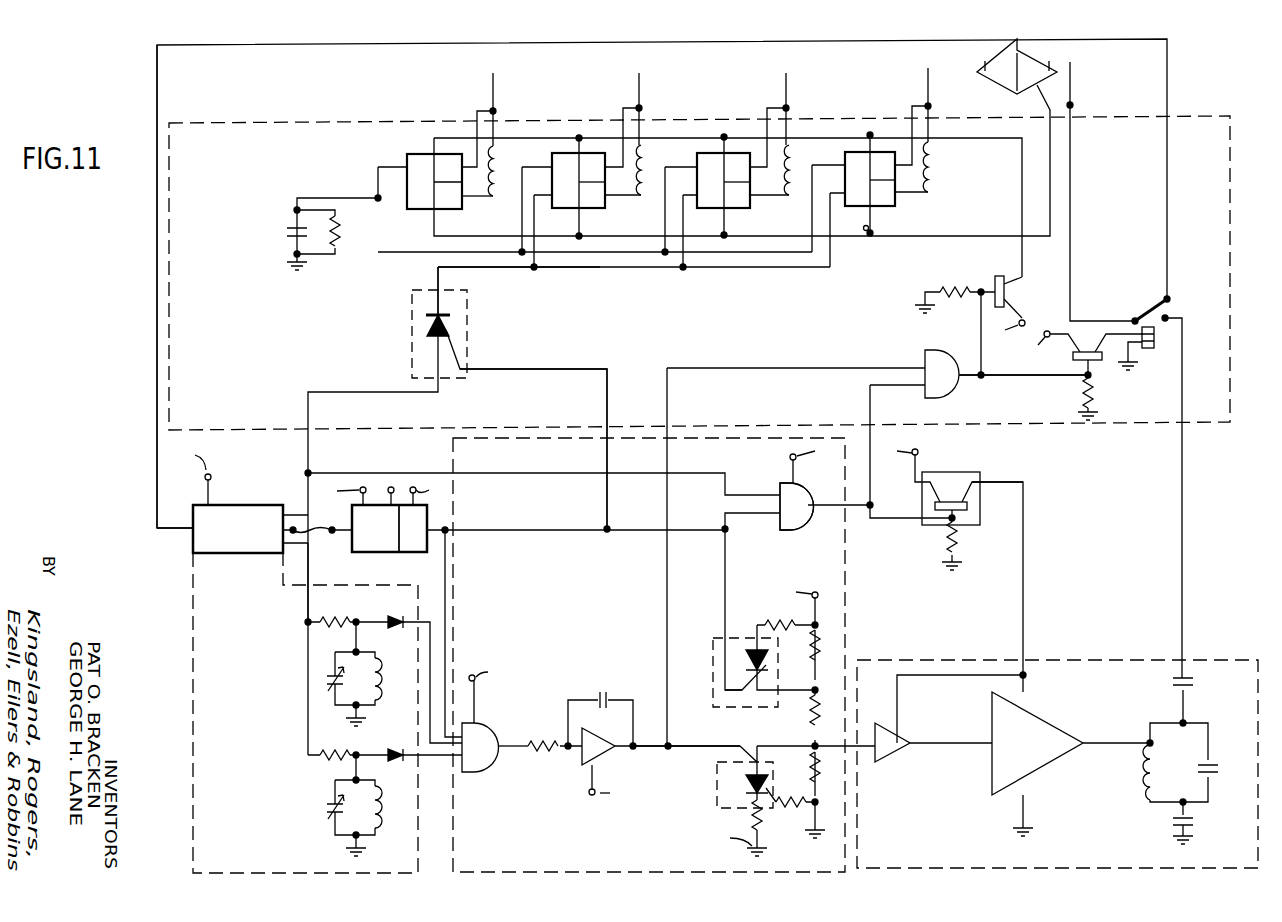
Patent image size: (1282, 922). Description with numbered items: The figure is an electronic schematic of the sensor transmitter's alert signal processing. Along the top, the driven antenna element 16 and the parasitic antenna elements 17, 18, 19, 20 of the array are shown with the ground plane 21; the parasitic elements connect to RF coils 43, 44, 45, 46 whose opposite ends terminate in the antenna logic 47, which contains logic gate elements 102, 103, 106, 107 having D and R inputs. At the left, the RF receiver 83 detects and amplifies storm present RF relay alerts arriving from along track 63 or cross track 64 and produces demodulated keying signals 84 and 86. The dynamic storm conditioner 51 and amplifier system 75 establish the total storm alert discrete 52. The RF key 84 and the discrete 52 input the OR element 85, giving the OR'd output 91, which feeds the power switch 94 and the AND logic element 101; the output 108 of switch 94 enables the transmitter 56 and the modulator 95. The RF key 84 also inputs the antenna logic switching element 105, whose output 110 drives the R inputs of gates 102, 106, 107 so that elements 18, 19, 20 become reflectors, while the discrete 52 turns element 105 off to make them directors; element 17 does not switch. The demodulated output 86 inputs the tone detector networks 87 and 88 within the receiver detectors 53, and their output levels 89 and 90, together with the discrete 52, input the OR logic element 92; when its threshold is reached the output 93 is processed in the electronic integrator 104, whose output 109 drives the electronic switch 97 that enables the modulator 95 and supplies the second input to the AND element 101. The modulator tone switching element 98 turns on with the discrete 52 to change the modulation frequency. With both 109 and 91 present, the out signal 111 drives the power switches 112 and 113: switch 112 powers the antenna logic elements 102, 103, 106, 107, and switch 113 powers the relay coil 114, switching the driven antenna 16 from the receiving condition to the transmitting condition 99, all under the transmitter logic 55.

The driven antenna element 16 is at (1072, 90).
The parasitic antenna element 17 is at (493, 86).
The parasitic antenna element 18 is at (639, 86).
The parasitic antenna element 19 is at (786, 86).
The parasitic antenna element 20 is at (928, 84).
The ground plane 21 is at (990, 83).
The RF coil 43 is at (499, 165).
The RF coil 44 is at (647, 165).
The RF coil 45 is at (795, 165).
The RF coil 46 is at (935, 163).
The antenna logic 47 is at (238, 125).
The dynamic storm conditioner 51 is at (379, 514).
The total storm alert discrete 52 is at (535, 370).
The receiver detectors 53 is at (193, 685).
The transmitter logic 55 is at (456, 850).
The transmitter 56 is at (1071, 764).
The along track transmission 63 is at (157, 463).
The cross track transmission 64 is at (157, 505).
The signal conditioning and amplifier system 75 is at (412, 528).
The RF receiver 83 is at (243, 499).
The demodulated RF key 84 is at (357, 473).
The OR element 85 is at (786, 484).
The demodulated output 86 is at (310, 578).
The tone detector network 87 is at (354, 671).
The tone detector network 88 is at (355, 802).
The output level 89 is at (428, 617).
The output level 90 is at (440, 757).
The OR'd output 91 is at (832, 508).
The OR logic element 92 is at (489, 768).
The output 93 is at (506, 745).
The power switch 94 is at (965, 472).
The modulator 95 is at (949, 718).
The electronic switch 97 is at (715, 801).
The modulator tone switching element 98 is at (713, 640).
The transmitting condition 99 is at (1185, 548).
The AND logic element 101 is at (925, 352).
The logic gate element 102 is at (736, 208).
The antenna logic element 103 is at (445, 209).
The electronic integrator 104 is at (582, 763).
The antenna logic switching element 105 is at (412, 332).
The logic gate element 106 is at (593, 208).
The logic gate element 107 is at (884, 206).
The output 108 is at (1025, 522).
The output 109 is at (650, 748).
The output 110 is at (500, 268).
The out signal 111 is at (1023, 389).
The power switch 112 is at (995, 283).
The power switch 113 is at (1103, 362).
The relay coil 114 is at (1150, 353).